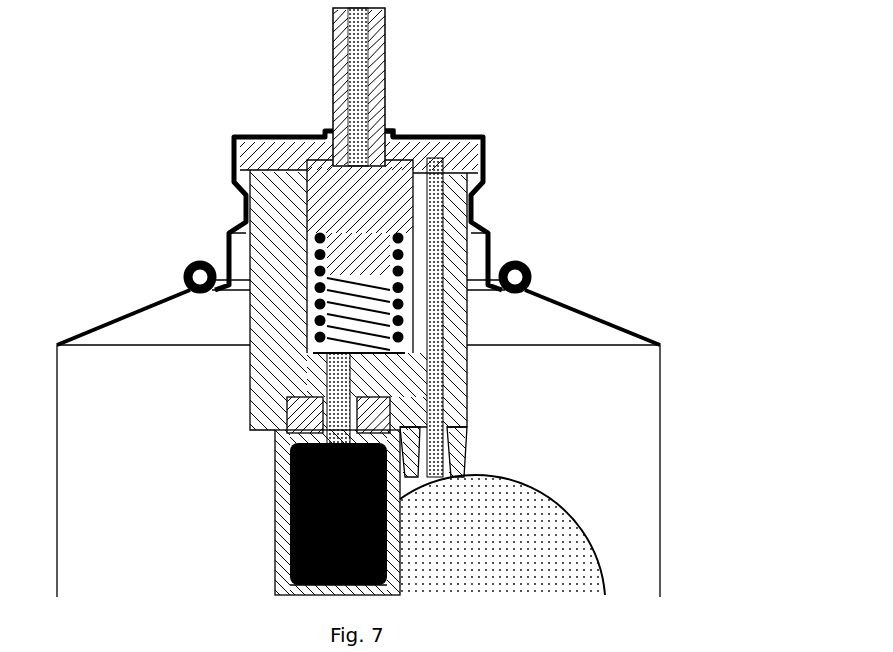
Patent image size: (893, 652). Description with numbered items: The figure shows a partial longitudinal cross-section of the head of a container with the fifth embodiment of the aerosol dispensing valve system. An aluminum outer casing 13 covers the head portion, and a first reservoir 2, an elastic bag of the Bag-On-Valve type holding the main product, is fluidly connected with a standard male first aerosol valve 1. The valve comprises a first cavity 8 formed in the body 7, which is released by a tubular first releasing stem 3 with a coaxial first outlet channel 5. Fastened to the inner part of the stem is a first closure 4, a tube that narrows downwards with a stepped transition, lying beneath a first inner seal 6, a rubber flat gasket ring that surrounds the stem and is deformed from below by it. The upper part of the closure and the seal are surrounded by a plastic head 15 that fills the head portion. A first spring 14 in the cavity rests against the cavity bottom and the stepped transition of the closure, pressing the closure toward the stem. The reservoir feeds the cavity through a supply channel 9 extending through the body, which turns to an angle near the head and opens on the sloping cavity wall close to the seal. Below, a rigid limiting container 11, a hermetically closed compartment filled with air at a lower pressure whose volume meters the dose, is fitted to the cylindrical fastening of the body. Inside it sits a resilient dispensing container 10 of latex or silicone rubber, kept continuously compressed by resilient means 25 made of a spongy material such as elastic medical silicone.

The first aerosol valve 1 is at (226, 130).
The first reservoir 2 is at (547, 508).
The first releasing stem 3 is at (378, 68).
The first closure 4 is at (350, 195).
The first outlet channel 5 is at (355, 78).
The first inner seal 6 is at (410, 133).
The body 7 is at (253, 193).
The first cavity 8 is at (315, 240).
The supply channel 9 is at (438, 200).
The dispensing container 10 is at (297, 447).
The rigid limiting container 11 is at (278, 567).
The outer casing 13 is at (490, 250).
The first spring 14 is at (315, 320).
The head 15 is at (485, 143).
The resilient means 25 is at (290, 505).